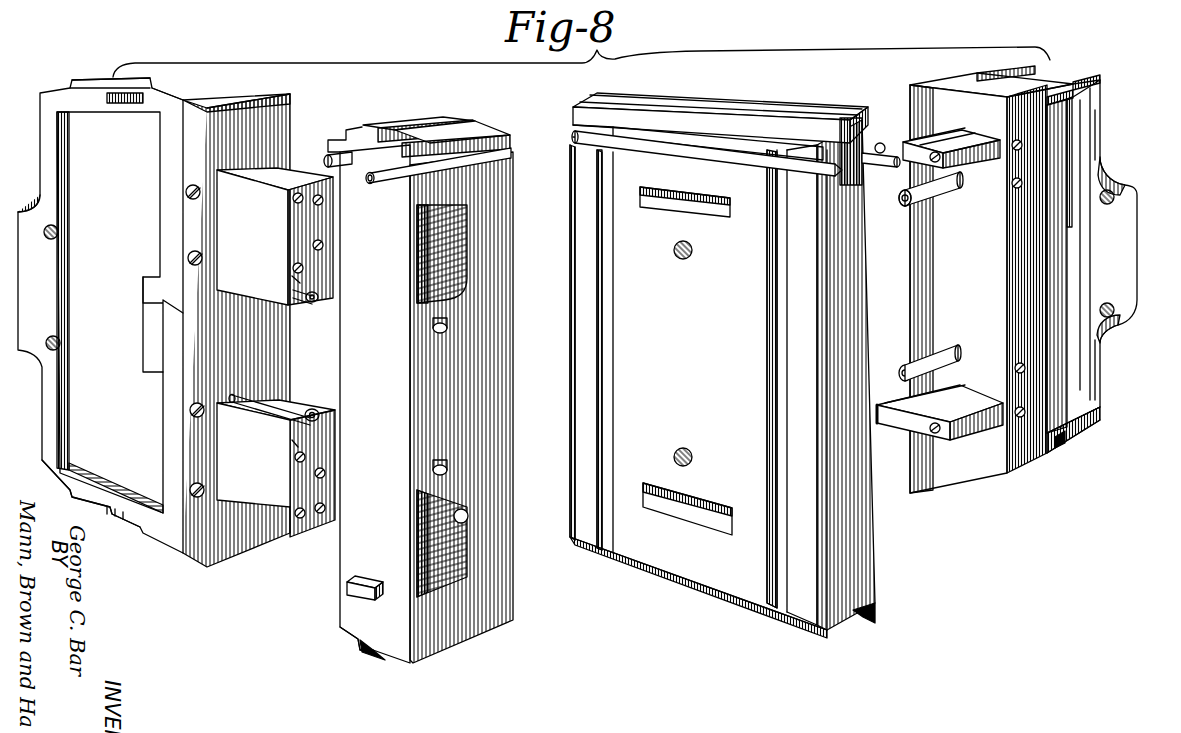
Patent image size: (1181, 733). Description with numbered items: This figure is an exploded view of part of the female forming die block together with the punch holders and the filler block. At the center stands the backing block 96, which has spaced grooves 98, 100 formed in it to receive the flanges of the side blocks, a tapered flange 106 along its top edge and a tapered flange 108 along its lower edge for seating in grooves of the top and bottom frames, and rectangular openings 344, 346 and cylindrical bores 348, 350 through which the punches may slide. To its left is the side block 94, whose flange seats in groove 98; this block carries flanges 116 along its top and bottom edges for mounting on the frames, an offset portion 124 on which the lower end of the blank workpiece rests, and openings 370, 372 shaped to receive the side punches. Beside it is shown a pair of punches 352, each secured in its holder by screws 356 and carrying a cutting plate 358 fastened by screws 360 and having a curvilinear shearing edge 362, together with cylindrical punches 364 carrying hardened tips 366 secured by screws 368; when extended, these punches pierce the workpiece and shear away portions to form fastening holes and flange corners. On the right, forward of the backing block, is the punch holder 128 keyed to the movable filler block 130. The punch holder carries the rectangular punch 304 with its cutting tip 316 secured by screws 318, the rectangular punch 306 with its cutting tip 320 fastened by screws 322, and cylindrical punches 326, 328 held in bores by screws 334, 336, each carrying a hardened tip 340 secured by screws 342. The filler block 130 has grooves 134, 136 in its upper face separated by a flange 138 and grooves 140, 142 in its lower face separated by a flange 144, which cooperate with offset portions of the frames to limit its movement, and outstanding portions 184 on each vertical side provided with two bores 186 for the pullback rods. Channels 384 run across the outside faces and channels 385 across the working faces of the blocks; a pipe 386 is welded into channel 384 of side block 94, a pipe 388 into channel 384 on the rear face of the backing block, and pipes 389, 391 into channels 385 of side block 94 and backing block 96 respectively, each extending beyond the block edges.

The side block 94 is at (513, 577).
The backing block 96 is at (873, 523).
The groove 98 is at (612, 300).
The groove 100 is at (777, 343).
The tapered flange 106 is at (780, 95).
The tapered flange 108 is at (855, 623).
The flanges 116 is at (448, 114).
The offset portion 124 is at (348, 577).
The punch holder 128 is at (995, 467).
The filler block 130 is at (1107, 408).
The groove 134 is at (1062, 83).
The groove 136 is at (1107, 80).
The flange 138 is at (1100, 62).
The groove 140 is at (1067, 443).
The groove 142 is at (1103, 417).
The flange 144 is at (1087, 433).
The outstanding portion 184 is at (1127, 248).
The bores 186 is at (1114, 190).
The rectangular punch 304 is at (960, 163).
The rectangular punch 306 is at (946, 442).
The cutting tip 316 is at (875, 166).
The screws 318 is at (938, 154).
The cutting tip 320 is at (927, 417).
The screws 322 is at (880, 423).
The cylindrical punch 326 is at (937, 197).
The cylindrical punch 328 is at (953, 347).
The screws 334 is at (1014, 188).
The screws 336 is at (1016, 410).
The hardened tip 340 is at (910, 210).
The screws 342 is at (900, 201).
The rectangular opening 344 is at (700, 213).
The rectangular opening 346 is at (700, 523).
The cylindrical bore 348 is at (692, 252).
The cylindrical bore 350 is at (687, 464).
The punch 352 is at (232, 452).
The screws 356 is at (190, 254).
The cutting plate 358 is at (308, 270).
The screws 360 is at (322, 205).
The curvilinear shearing edge 362 is at (302, 285).
The cylindrical punch 364 is at (297, 298).
The hardened tip 366 is at (318, 302).
The screws 368 is at (318, 293).
The opening 370 is at (415, 305).
The opening 372 is at (433, 337).
The channel 384 is at (345, 142).
The channel 385 is at (503, 157).
The pipe 386 is at (326, 156).
The pipe 388 is at (893, 147).
The pipe 389 is at (370, 181).
The pipe 391 is at (643, 158).